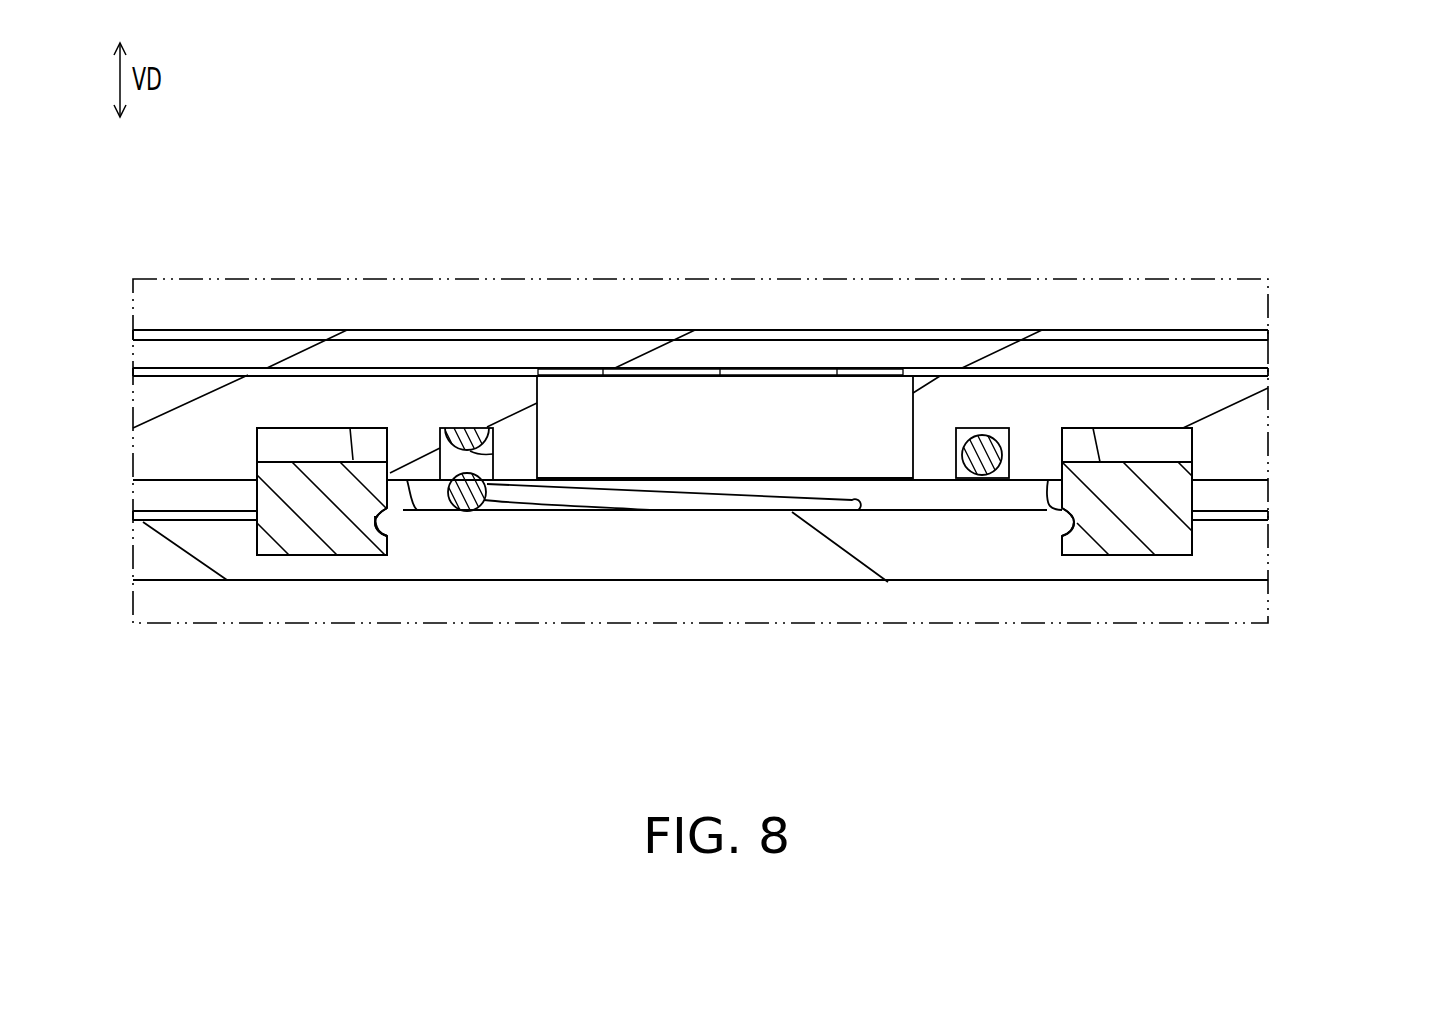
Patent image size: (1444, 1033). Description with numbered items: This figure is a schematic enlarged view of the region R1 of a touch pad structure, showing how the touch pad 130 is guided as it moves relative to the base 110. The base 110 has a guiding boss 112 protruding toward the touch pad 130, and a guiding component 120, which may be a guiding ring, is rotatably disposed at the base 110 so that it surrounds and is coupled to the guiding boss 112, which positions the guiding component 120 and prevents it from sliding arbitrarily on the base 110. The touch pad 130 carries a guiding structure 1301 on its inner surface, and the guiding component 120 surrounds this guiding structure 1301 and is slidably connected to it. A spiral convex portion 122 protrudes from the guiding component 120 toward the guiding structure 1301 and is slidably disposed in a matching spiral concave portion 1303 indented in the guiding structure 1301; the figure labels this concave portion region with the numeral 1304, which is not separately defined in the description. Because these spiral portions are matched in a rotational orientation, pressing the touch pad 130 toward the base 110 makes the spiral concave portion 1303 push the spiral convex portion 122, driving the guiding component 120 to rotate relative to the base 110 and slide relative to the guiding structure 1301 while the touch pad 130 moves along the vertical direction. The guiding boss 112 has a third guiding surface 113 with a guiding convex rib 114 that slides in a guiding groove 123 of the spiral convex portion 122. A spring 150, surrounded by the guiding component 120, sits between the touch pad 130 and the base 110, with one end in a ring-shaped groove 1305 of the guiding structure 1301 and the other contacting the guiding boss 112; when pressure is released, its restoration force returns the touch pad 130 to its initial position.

The region R1 is at (1268, 300).
The base 110 is at (750, 609).
The guiding boss 112 is at (672, 533).
The third guiding surface 113 is at (377, 543).
The guiding convex rib 114 is at (380, 525).
The guiding component 120 is at (789, 583).
The spiral convex portion 122 is at (273, 532).
The guiding groove 123 is at (363, 522).
The touch pad 130 is at (128, 330).
The guiding structure 1301 is at (1029, 422).
The spiral concave portion 1303 is at (738, 315).
The fixing block 1304 is at (372, 443).
The ring-shaped groove 1305 is at (447, 457).
The spring 150 is at (570, 495).